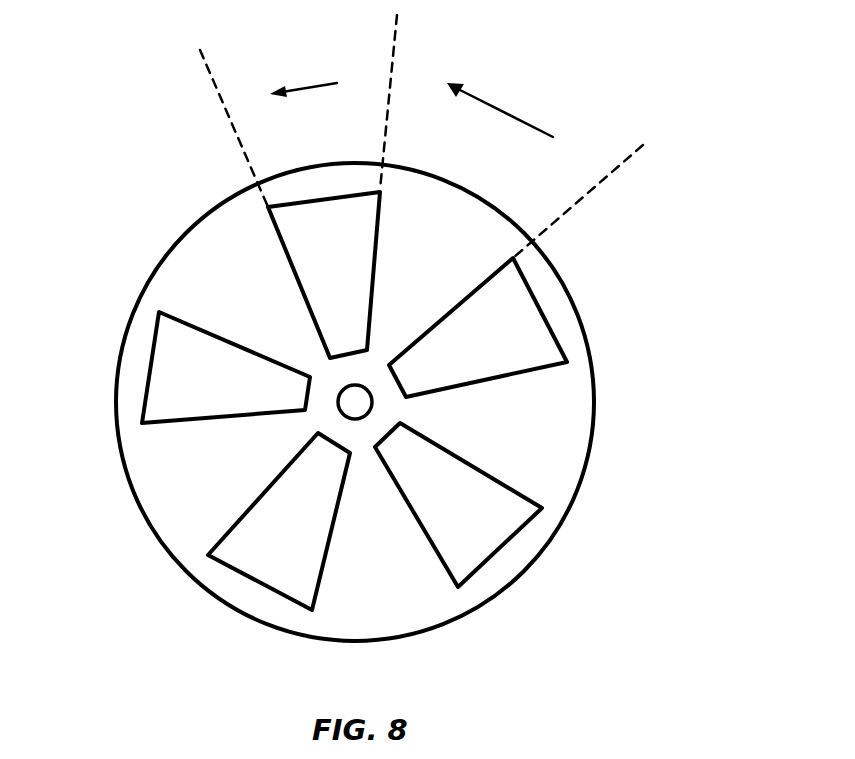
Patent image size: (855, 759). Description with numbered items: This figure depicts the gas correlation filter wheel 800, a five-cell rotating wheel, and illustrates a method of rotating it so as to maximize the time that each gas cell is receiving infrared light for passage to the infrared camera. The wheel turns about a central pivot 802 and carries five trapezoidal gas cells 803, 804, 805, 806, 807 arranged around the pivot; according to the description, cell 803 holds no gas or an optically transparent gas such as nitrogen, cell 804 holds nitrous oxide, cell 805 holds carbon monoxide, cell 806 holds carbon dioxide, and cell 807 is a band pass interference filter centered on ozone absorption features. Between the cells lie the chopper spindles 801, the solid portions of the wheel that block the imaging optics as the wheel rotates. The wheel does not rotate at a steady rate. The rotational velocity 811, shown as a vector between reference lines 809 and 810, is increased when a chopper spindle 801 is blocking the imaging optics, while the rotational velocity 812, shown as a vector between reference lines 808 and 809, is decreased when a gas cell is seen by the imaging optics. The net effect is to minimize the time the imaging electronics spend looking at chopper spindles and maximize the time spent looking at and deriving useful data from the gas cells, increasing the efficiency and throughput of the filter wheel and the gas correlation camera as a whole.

The gas correlation filter wheel 800 is at (400, 420).
The chopper spindle 801 is at (563, 432).
The pivot 802 is at (340, 401).
The gas cell 803 is at (500, 523).
The gas cell 804 is at (272, 565).
The gas cell 805 is at (173, 360).
The gas cell 806 is at (287, 228).
The gas cell 807 is at (532, 318).
The reference line 808 is at (212, 83).
The reference line 809 is at (395, 53).
The reference line 810 is at (618, 167).
The rotational velocity 811 is at (515, 115).
The rotational velocity 812 is at (307, 84).